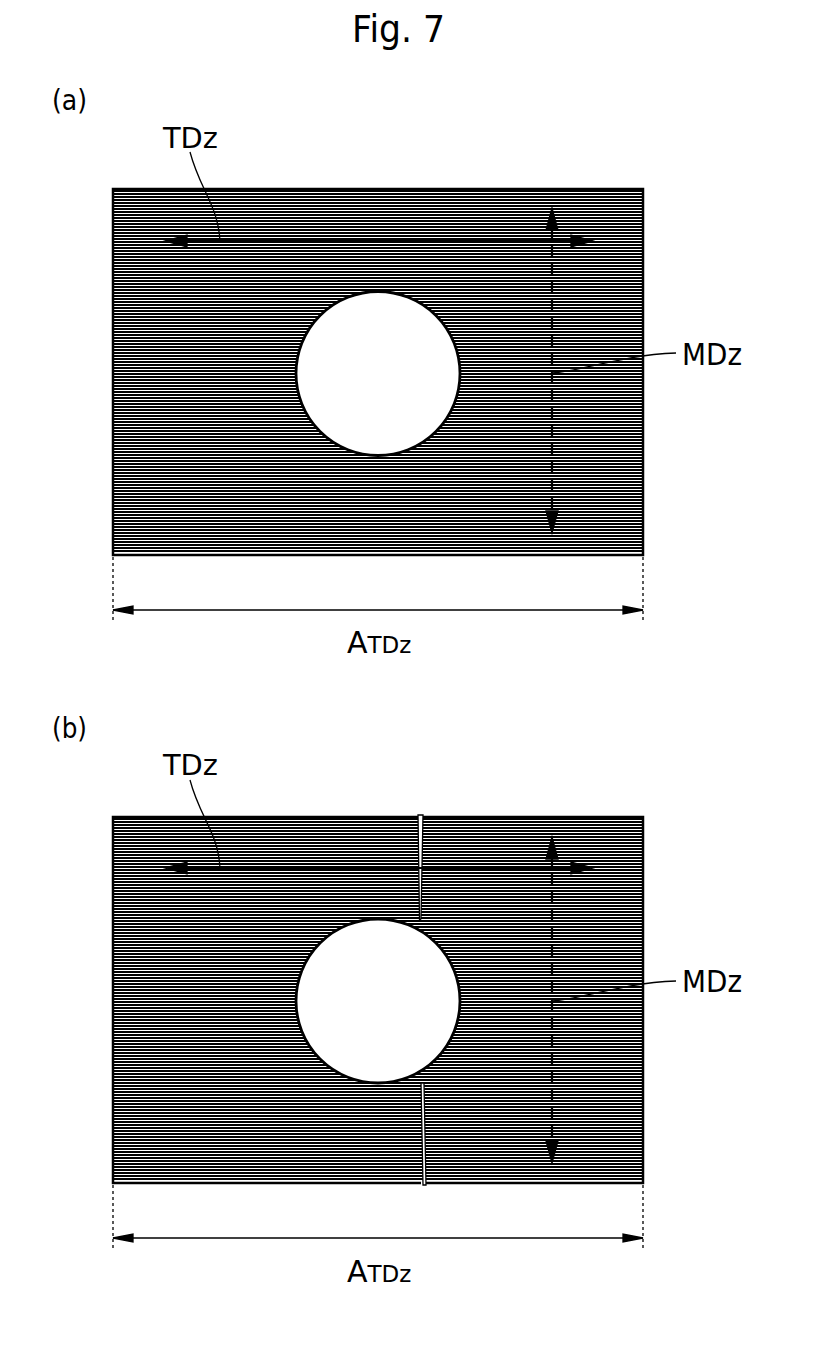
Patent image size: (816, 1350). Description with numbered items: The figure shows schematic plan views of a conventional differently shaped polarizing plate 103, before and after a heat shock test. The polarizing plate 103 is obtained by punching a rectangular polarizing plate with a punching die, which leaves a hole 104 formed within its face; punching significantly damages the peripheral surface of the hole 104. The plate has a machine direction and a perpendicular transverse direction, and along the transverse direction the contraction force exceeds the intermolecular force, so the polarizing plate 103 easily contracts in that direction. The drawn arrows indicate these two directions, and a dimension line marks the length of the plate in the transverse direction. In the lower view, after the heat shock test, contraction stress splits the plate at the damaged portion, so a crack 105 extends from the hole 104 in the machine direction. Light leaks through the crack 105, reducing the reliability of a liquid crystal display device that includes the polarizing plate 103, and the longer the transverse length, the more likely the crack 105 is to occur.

The polarizing plate 103 is at (621, 203).
The hole 104 is at (354, 318).
The crack 105 is at (420, 860).